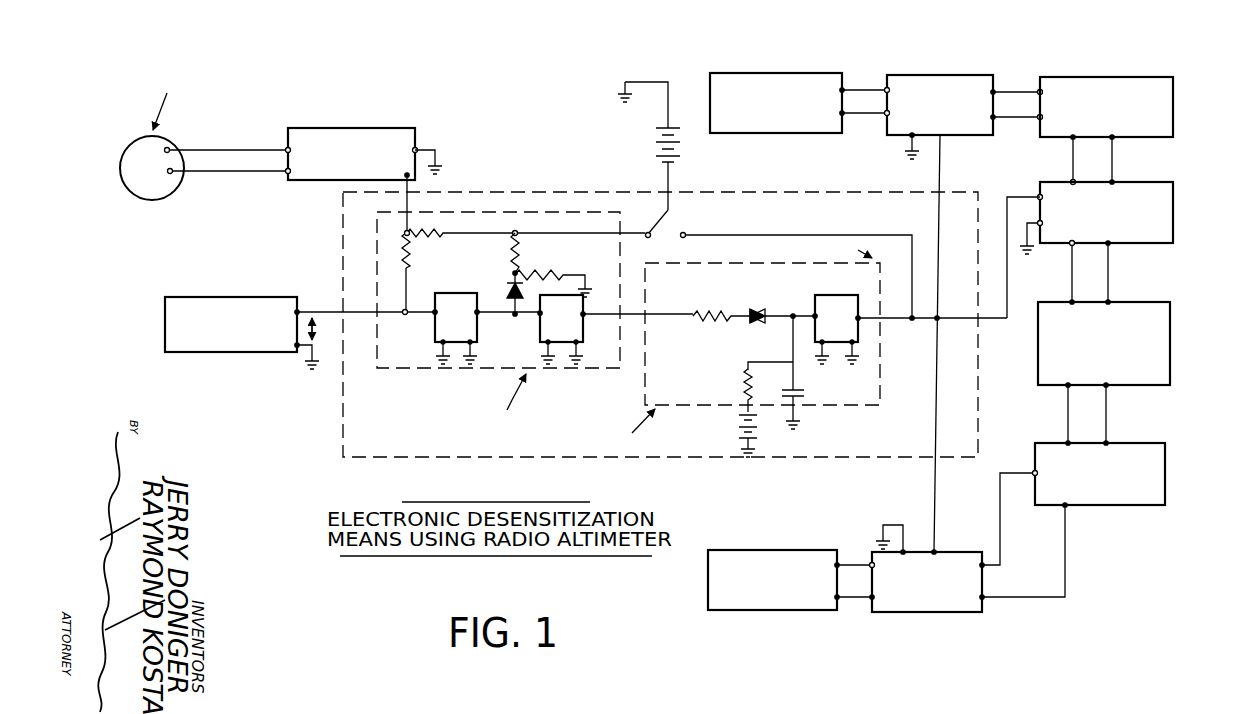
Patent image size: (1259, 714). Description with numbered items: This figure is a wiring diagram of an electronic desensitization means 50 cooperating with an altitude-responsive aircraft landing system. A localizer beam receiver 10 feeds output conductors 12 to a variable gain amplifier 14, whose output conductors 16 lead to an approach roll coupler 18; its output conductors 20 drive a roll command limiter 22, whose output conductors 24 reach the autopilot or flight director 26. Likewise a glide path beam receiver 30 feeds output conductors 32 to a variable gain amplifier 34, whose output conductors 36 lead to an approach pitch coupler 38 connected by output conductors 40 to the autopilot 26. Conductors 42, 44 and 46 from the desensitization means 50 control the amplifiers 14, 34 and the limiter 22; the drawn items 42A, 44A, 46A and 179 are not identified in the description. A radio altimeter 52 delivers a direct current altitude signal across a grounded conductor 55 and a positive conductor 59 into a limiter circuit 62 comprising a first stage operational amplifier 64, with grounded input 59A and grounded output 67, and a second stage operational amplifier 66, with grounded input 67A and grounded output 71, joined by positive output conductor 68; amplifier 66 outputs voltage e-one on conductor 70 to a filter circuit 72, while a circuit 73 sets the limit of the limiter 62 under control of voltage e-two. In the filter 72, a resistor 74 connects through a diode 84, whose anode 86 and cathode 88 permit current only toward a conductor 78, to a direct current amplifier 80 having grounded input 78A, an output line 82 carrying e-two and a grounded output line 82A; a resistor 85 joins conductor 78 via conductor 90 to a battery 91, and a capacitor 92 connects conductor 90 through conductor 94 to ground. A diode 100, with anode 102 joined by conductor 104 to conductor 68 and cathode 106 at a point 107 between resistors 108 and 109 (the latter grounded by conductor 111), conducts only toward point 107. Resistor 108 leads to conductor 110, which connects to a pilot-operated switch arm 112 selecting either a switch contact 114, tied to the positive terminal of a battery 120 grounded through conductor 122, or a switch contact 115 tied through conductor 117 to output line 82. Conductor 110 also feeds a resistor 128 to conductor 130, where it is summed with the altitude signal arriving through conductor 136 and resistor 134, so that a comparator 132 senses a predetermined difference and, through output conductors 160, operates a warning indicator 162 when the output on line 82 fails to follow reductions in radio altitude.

The localizer beam receiver 10 is at (767, 70).
The electrical output conductors 12 is at (858, 112).
The variable gain amplifier 14 is at (937, 72).
The output conductors 16 is at (1012, 116).
The approach roll coupler 18 is at (1097, 74).
The output conductors 20 is at (1112, 180).
The roll command limiter 22 is at (1177, 207).
The output conductors 24 is at (1108, 288).
The autopilot or flight director 26 is at (1174, 340).
The glide path beam receiver 30 is at (704, 582).
The electrical output conductors 32 is at (845, 570).
The variable gain amplifier 34 is at (932, 614).
The output conductors 36 is at (992, 600).
The approach pitch coupler 38 is at (1168, 488).
The output conductors 40 is at (1106, 430).
The output conductor 42 is at (940, 170).
The ground connection 42A is at (910, 148).
The output conductor 44 is at (935, 524).
The ground connection 44A is at (905, 538).
The output conductor 46 is at (1007, 272).
The ground connection 46A is at (1026, 215).
The electronic desensitization means 50 is at (340, 425).
The radio altimeter 52 is at (165, 322).
The conductor 55 is at (308, 352).
The conductor 59 is at (318, 306).
The grounded input 59A is at (440, 350).
The limiter circuit 62 is at (480, 372).
The first stage direct current operational amplifier 64 is at (436, 303).
The second stage direct current operational amplifier 66 is at (578, 333).
The negative grounded output 67 is at (472, 350).
The grounded input 67A is at (552, 355).
The positive output conductor 68 is at (545, 350).
The positive output conductor 70 is at (665, 313).
The grounded negative output conductor 71 is at (582, 358).
The filter circuit 72 is at (700, 408).
The limit-setting circuit 73 is at (508, 282).
The resistor element 74 is at (715, 312).
The conductor 78 is at (794, 312).
The grounded input 78A is at (826, 355).
The direct current amplifier 80 is at (838, 294).
The output line 82 is at (896, 320).
The negative output line 82A is at (856, 356).
The diode device 84 is at (757, 306).
The resistor 85 is at (744, 386).
The anode element 86 is at (750, 323).
The cathode element 88 is at (764, 322).
The conductor 90 is at (792, 338).
The battery 91 is at (760, 426).
The capacitor 92 is at (806, 392).
The conductor 94 is at (800, 412).
The diode 100 is at (524, 295).
The anode element 102 is at (503, 308).
The conductor 104 is at (512, 318).
The cathode element 106 is at (506, 290).
The point 107 is at (518, 275).
The resistor 108 is at (525, 262).
The resistor 109 is at (548, 276).
The conductor 110 is at (460, 233).
The conductor 111 is at (601, 297).
The switch arm 112 is at (650, 220).
The switch contact 114 is at (664, 210).
The second switch contact 115 is at (688, 233).
The conductor 117 is at (772, 235).
The battery 120 is at (650, 150).
The conductor 122 is at (652, 80).
The resistor 128 is at (424, 238).
The conductor 130 is at (410, 204).
The comparator 132 is at (360, 127).
The second resistor 134 is at (400, 250).
The conductor 136 is at (404, 298).
The output conductors 160 is at (258, 150).
The warning indicator 162 is at (128, 188).
The battery lead 179 is at (668, 180).